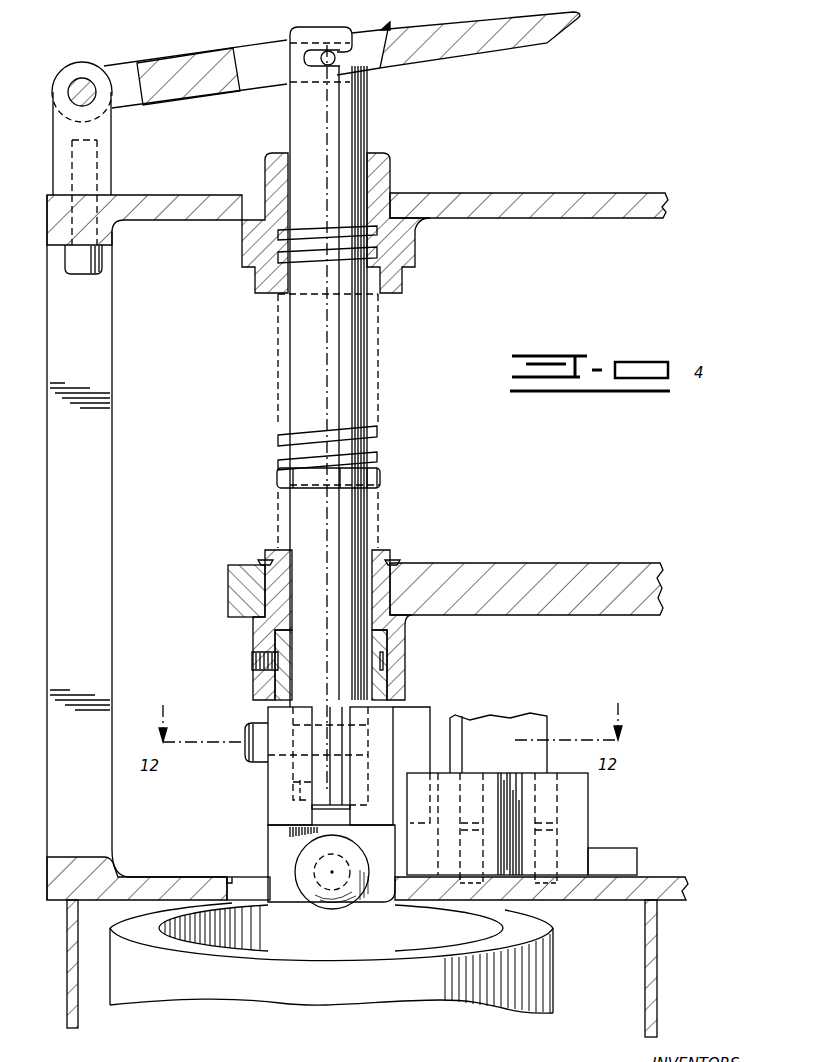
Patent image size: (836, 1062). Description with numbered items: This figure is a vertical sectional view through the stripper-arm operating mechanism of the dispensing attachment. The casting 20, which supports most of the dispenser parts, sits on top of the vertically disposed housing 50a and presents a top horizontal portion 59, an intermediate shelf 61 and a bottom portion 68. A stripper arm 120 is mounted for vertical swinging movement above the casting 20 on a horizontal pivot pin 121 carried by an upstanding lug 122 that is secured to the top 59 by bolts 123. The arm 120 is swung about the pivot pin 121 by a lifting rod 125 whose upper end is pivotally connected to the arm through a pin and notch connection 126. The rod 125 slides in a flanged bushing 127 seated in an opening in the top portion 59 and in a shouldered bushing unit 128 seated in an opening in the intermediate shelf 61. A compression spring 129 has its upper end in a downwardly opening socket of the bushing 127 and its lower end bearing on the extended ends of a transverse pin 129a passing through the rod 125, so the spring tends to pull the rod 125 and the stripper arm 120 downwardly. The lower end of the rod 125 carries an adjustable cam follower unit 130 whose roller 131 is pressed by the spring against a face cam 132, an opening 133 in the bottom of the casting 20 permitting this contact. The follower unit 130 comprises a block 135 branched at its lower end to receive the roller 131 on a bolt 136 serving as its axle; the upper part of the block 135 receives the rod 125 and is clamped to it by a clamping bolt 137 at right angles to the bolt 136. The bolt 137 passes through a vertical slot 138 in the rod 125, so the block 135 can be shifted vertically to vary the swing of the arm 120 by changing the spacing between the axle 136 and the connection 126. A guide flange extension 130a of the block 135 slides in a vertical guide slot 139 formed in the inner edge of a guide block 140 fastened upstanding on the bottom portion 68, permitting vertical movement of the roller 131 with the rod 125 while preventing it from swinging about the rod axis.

The casting 20 is at (52, 789).
The housing 50a is at (657, 953).
The top horizontal portion 59 is at (571, 193).
The intermediate shelf 61 is at (480, 570).
The bottom portion 68 is at (603, 892).
The stripper arm 120 is at (521, 40).
The pivot pin 121 is at (87, 80).
The lug 122 is at (107, 137).
The bolts 123 is at (107, 256).
The lifting rod 125 is at (361, 350).
The pin and notch connection 126 is at (365, 72).
The flanged bushing 127 is at (392, 166).
The shouldered bushing unit 128 is at (381, 553).
The compression spring 129 is at (380, 431).
The transverse pin 129a is at (383, 478).
The cam follower unit 130 is at (272, 717).
The guide flange extension 130a is at (430, 719).
The roller 131 is at (328, 906).
The face cam 132 is at (223, 992).
The opening 133 is at (230, 882).
The block 135 is at (280, 838).
The bolt 136 is at (312, 872).
The clamping bolt 137 is at (384, 722).
The vertical slot 138 is at (300, 782).
The vertical guide slot 139 is at (433, 865).
The guide block 140 is at (586, 802).